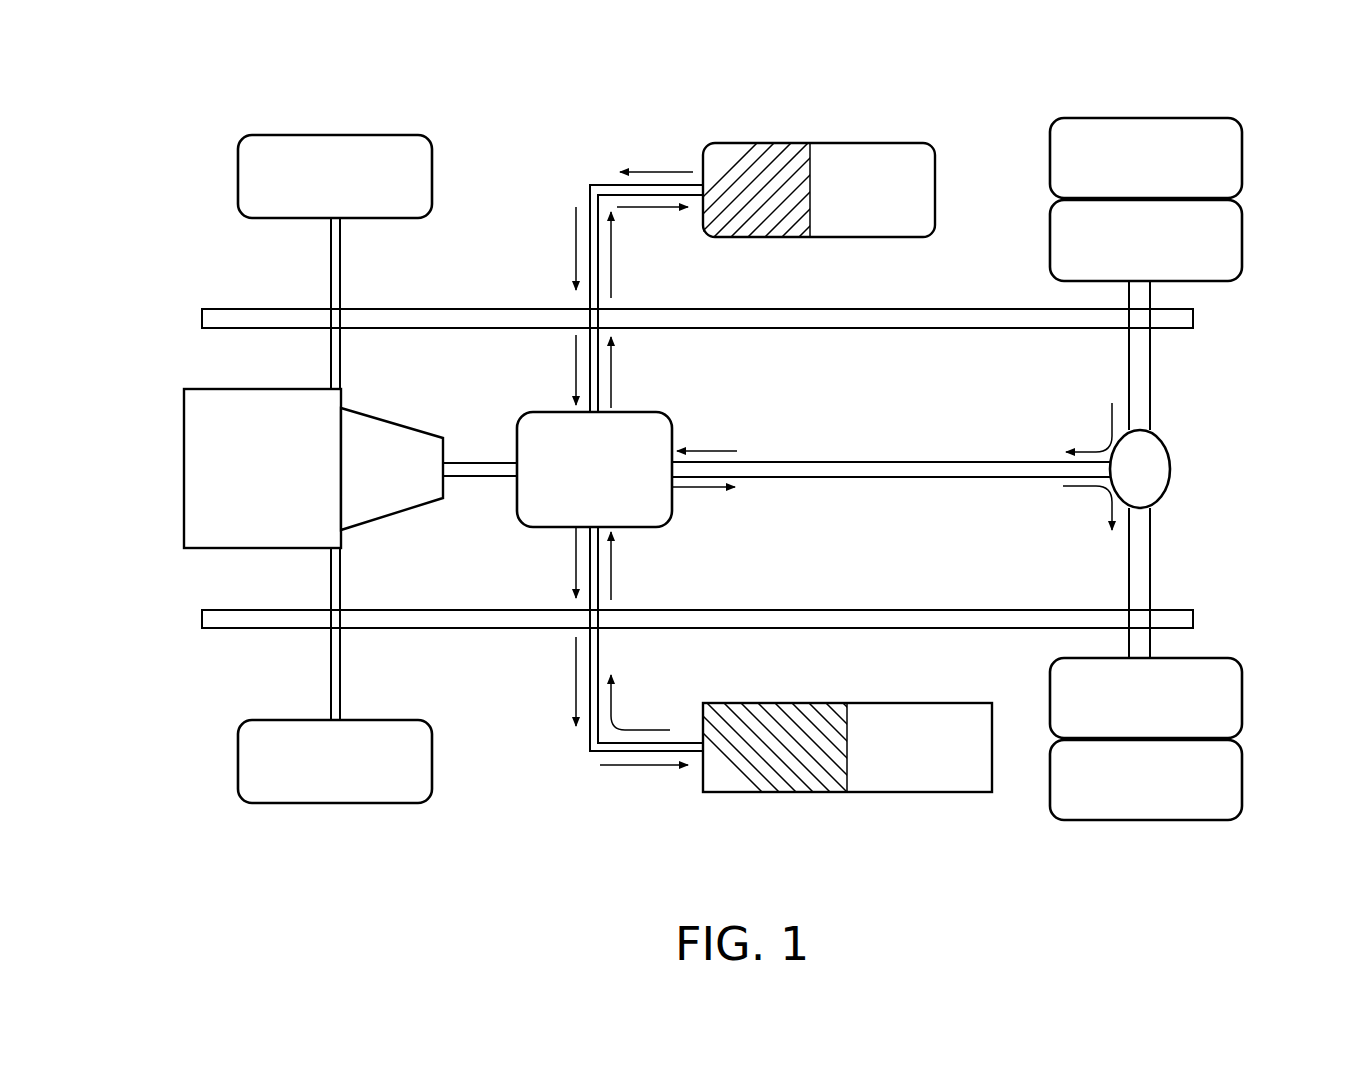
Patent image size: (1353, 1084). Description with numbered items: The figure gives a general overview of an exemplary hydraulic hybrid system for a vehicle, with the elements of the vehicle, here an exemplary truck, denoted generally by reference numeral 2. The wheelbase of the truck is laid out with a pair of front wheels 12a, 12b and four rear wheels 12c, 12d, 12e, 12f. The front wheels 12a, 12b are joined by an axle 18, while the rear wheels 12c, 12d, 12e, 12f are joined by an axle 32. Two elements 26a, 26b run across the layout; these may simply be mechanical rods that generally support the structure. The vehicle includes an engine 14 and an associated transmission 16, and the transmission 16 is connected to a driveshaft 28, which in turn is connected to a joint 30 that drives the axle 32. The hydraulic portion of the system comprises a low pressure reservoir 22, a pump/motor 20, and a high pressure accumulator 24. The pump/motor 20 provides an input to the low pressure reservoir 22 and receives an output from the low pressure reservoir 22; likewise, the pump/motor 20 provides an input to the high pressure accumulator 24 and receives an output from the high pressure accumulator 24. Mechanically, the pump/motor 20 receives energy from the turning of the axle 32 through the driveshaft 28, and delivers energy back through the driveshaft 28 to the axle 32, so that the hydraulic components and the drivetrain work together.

The vehicle elements 2 is at (140, 95).
The front wheel 12a is at (238, 172).
The front wheel 12b is at (238, 762).
The rear wheel 12c is at (1242, 163).
The rear wheel 12d is at (1242, 241).
The rear wheel 12e is at (1242, 699).
The rear wheel 12f is at (1242, 779).
The engine 14 is at (183, 472).
The transmission 16 is at (401, 518).
The axle 18 is at (330, 263).
The pump/motor 20 is at (518, 414).
The low pressure reservoir 22 is at (819, 142).
The high pressure accumulator 24 is at (847, 793).
The mechanical rod 26a is at (893, 329).
The mechanical rod 26b is at (893, 609).
The driveshaft 28 is at (893, 478).
The joint 30 is at (1160, 471).
The axle 32 is at (1142, 380).